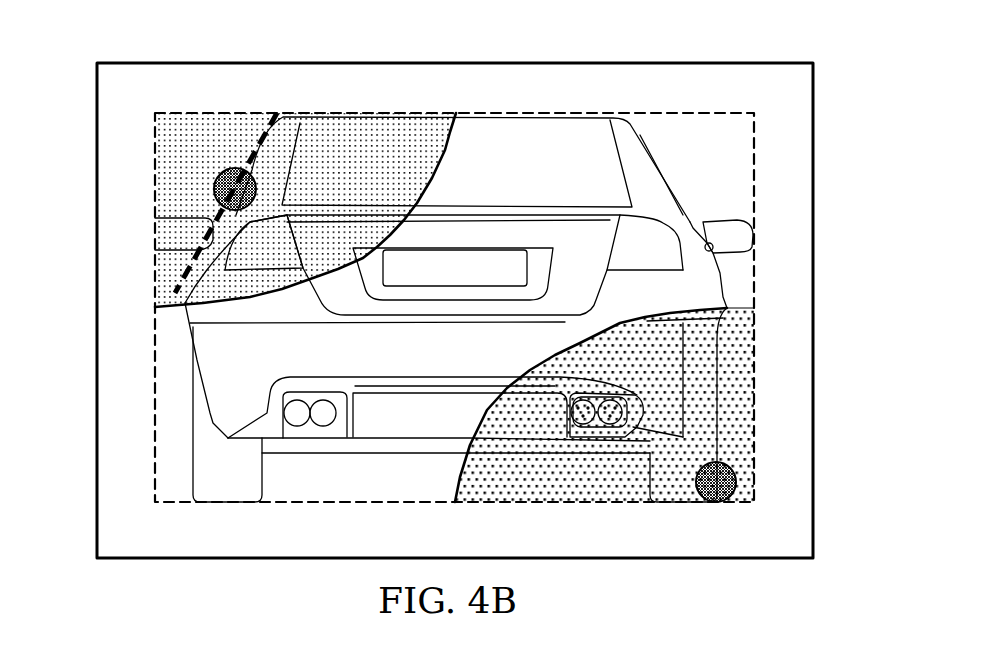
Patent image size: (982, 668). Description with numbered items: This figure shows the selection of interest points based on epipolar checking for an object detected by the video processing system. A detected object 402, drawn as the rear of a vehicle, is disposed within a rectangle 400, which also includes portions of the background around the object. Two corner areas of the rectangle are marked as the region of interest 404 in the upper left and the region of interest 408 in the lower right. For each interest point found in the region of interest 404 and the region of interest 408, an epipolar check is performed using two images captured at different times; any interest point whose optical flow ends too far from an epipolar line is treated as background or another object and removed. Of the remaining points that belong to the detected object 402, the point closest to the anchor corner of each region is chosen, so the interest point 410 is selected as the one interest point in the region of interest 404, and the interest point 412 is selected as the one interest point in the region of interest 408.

The rectangle 400 is at (754, 168).
The detected object 402 is at (700, 295).
The region of interest 404 is at (206, 149).
The region of interest 408 is at (610, 482).
The interest point 410 is at (213, 183).
The interest point 412 is at (717, 462).